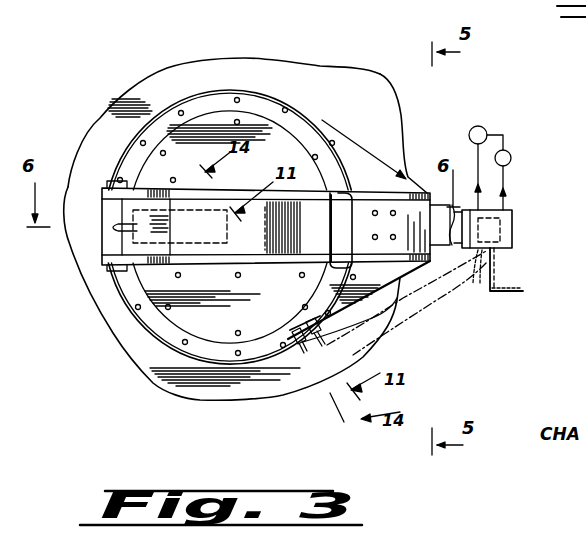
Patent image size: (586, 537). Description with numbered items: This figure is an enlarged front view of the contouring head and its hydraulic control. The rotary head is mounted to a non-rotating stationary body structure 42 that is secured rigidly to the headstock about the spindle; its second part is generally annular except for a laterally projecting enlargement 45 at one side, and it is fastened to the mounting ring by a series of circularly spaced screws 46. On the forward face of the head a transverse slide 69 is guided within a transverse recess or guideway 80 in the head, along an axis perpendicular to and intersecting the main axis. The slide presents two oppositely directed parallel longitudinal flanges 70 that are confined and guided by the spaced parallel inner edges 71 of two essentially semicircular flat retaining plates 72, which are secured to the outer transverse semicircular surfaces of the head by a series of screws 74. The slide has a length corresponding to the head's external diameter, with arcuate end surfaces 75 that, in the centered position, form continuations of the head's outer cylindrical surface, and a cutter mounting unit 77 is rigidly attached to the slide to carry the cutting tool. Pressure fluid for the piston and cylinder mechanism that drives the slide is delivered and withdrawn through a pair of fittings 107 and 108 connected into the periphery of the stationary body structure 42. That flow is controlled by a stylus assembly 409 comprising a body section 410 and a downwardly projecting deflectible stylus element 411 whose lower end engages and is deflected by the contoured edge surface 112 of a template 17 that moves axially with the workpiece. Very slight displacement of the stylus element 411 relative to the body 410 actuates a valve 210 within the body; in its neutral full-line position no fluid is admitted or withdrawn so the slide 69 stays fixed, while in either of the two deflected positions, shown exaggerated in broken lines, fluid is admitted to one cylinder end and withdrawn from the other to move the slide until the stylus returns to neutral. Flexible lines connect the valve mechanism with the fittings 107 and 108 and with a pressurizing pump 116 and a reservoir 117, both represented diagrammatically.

The non-rotating stationary body structure 42 is at (169, 118).
The screws 46 is at (237, 100).
The retaining plates 72 is at (263, 120).
The laterally projecting enlargement 45 is at (408, 175).
The screws 74 is at (297, 188).
The cutter mounting unit 77 is at (147, 205).
The longitudinal flanges 70 is at (105, 188).
The arcuate end surfaces 75 is at (107, 240).
The transverse slide 69 is at (160, 260).
The transverse recess or guideway 80 is at (340, 230).
The inner edges 71 is at (357, 193).
The fitting 108 is at (283, 347).
The fitting 107 is at (317, 350).
The contoured edge surface 112 is at (477, 317).
The stylus assembly 409 is at (517, 205).
The body section 410 is at (512, 211).
The valve 210 is at (503, 228).
The deflectible stylus element 411 is at (497, 267).
The template 17 is at (507, 293).
The reservoir 117 is at (481, 127).
The pressurizing pump 116 is at (509, 153).